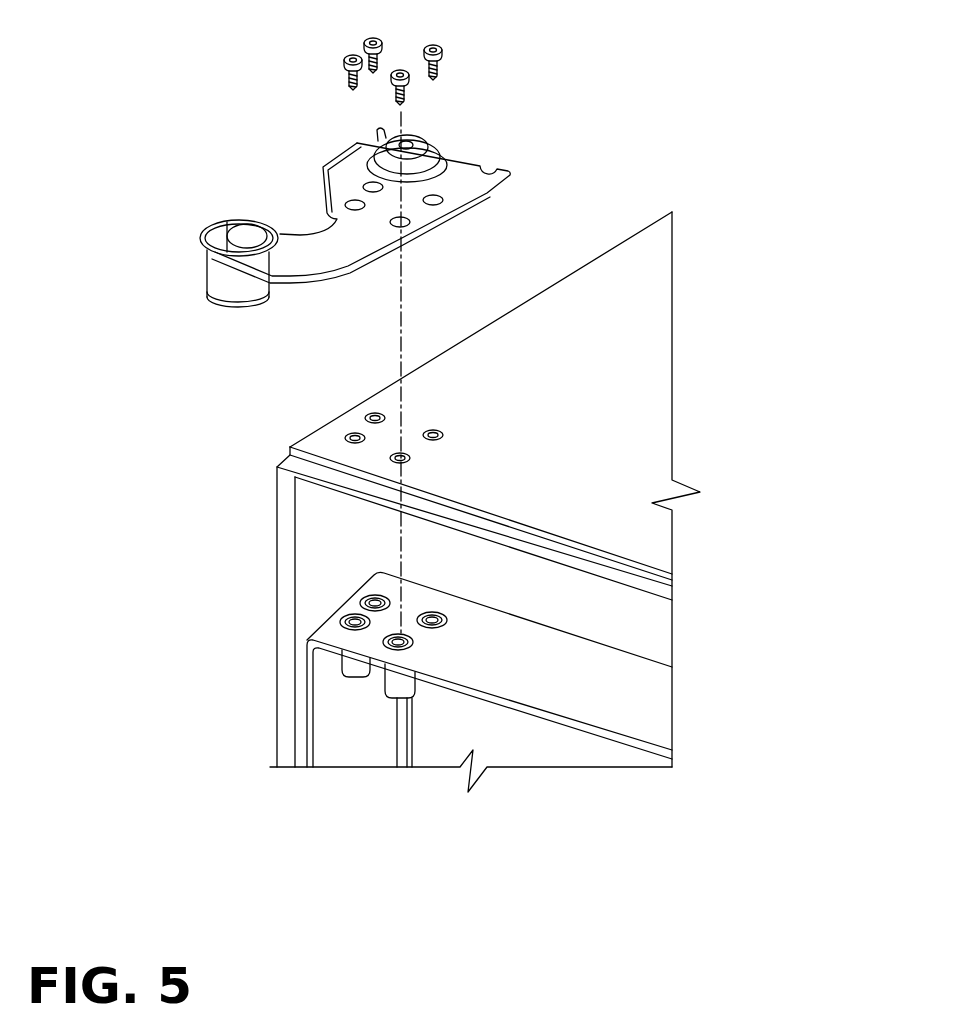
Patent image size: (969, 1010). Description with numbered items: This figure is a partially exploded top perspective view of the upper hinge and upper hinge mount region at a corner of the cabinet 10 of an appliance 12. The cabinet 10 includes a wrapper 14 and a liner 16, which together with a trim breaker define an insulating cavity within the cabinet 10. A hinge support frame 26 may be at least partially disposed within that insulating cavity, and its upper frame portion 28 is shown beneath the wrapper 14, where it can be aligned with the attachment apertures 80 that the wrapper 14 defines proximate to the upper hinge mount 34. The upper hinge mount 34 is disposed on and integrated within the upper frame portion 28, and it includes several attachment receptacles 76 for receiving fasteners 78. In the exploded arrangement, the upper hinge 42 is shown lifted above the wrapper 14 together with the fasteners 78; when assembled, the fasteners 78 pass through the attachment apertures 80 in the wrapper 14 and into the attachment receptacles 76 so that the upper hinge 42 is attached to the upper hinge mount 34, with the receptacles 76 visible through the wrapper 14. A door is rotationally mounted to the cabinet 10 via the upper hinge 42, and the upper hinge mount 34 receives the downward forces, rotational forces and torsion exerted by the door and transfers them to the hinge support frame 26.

The cabinet 10 is at (475, 481).
The appliance 12 is at (698, 253).
The wrapper 14 is at (630, 427).
The liner 16 is at (395, 531).
The hinge support frame 26 is at (572, 703).
The upper frame portion 28 is at (600, 690).
The upper hinge mount 34 is at (465, 643).
The upper hinge 42 is at (302, 250).
The attachment receptacles 76 is at (397, 685).
The fasteners 78 is at (353, 55).
The attachment apertures 80 is at (400, 450).